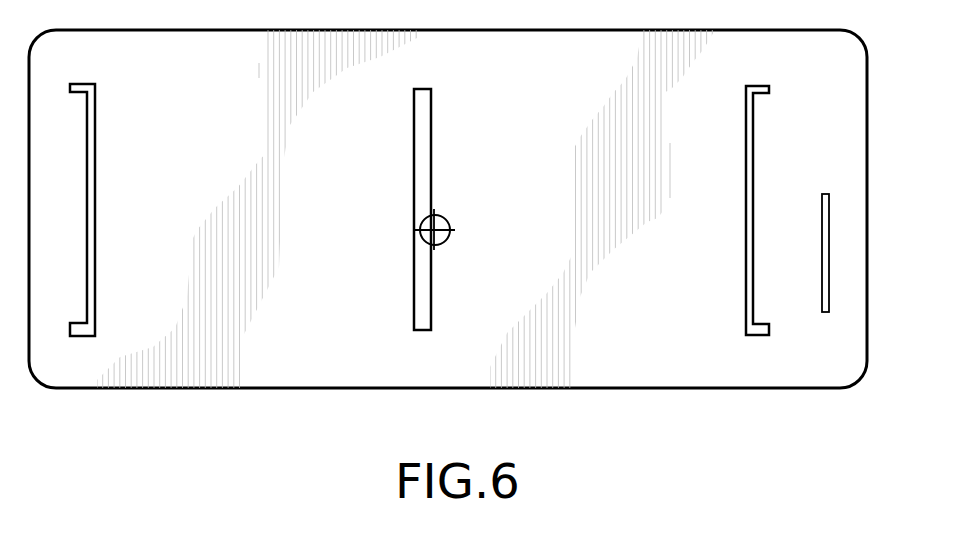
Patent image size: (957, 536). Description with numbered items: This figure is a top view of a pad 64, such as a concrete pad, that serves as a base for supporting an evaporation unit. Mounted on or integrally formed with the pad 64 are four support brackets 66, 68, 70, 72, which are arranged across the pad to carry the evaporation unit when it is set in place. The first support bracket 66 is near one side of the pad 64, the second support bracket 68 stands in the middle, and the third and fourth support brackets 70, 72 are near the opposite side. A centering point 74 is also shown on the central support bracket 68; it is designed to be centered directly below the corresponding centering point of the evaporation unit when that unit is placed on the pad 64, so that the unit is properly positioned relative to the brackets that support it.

The pad 64 is at (585, 388).
The support bracket 66 is at (95, 158).
The support bracket 68 is at (432, 134).
The support bracket 70 is at (753, 122).
The support bracket 72 is at (829, 250).
The centering point 74 is at (443, 240).